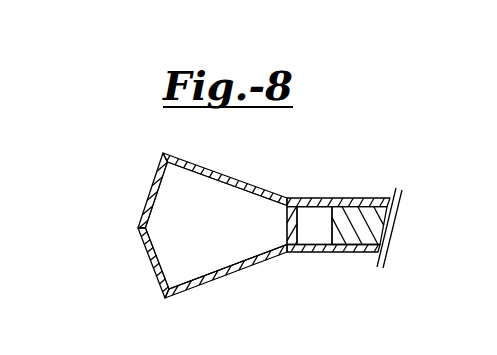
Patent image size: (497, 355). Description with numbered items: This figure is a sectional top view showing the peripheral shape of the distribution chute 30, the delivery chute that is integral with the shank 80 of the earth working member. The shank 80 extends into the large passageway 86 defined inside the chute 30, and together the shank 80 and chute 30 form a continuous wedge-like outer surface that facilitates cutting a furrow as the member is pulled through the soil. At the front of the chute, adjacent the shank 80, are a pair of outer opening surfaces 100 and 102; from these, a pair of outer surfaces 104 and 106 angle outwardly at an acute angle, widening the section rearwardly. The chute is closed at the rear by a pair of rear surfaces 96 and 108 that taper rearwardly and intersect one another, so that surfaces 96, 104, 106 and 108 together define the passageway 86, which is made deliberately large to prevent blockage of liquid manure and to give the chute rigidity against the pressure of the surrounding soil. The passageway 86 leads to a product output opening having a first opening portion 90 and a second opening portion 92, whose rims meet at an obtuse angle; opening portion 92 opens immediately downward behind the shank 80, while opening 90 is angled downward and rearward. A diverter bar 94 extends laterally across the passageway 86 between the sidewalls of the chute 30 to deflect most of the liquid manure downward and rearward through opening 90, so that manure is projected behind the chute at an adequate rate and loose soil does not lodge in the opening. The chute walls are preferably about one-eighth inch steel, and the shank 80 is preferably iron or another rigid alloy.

The distribution chute 30 is at (243, 209).
The shank 80 is at (368, 235).
The passageway 86 is at (226, 238).
The first opening portion 90 is at (232, 250).
The second opening portion 92 is at (312, 218).
The diverter bar 94 is at (285, 222).
The rear surface 96 is at (147, 258).
The outer opening surface 100 is at (333, 207).
The outer opening surface 102 is at (310, 243).
The outer surface 104 is at (201, 163).
The outer surface 106 is at (203, 287).
The rear surface 108 is at (155, 176).